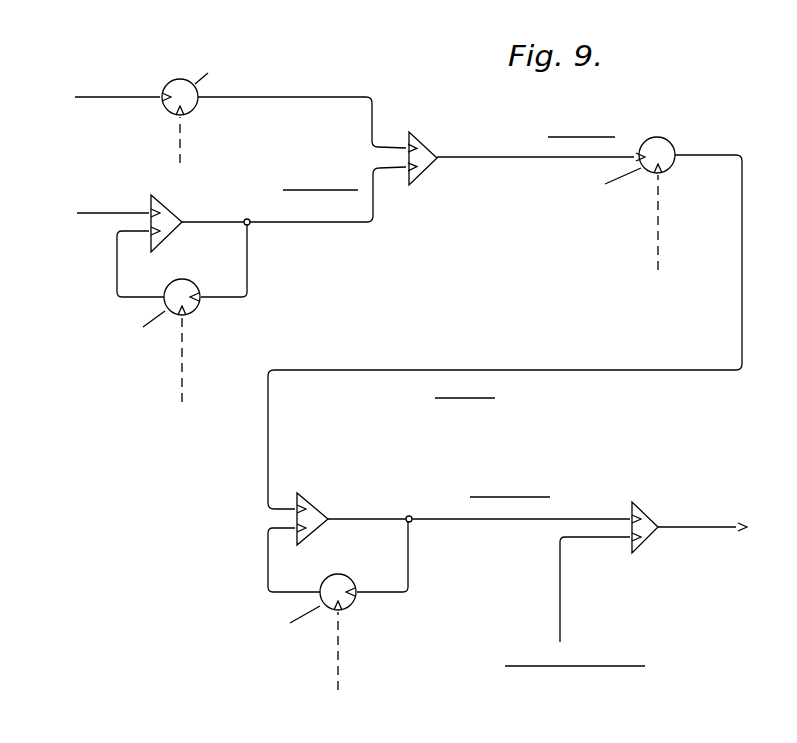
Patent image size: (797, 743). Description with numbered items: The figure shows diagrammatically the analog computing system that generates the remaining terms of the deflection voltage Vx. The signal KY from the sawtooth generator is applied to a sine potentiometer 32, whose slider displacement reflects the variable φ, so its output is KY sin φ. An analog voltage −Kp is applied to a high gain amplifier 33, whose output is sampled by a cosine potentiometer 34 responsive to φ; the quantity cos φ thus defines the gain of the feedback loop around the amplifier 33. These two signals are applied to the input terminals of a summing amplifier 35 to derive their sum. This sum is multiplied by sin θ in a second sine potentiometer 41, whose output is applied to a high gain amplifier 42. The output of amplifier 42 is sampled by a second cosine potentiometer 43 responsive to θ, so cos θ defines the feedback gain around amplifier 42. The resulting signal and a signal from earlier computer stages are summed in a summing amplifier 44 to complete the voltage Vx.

The sine potentiometer 32 is at (165, 112).
The high gain amplifier 33 is at (170, 210).
The cosine potentiometer 34 is at (195, 282).
The summing amplifier 35 is at (413, 132).
The second sine potentiometer 41 is at (668, 140).
The high gain amplifier 42 is at (303, 497).
The second cosine potentiometer 43 is at (352, 578).
The summing amplifier 44 is at (648, 512).